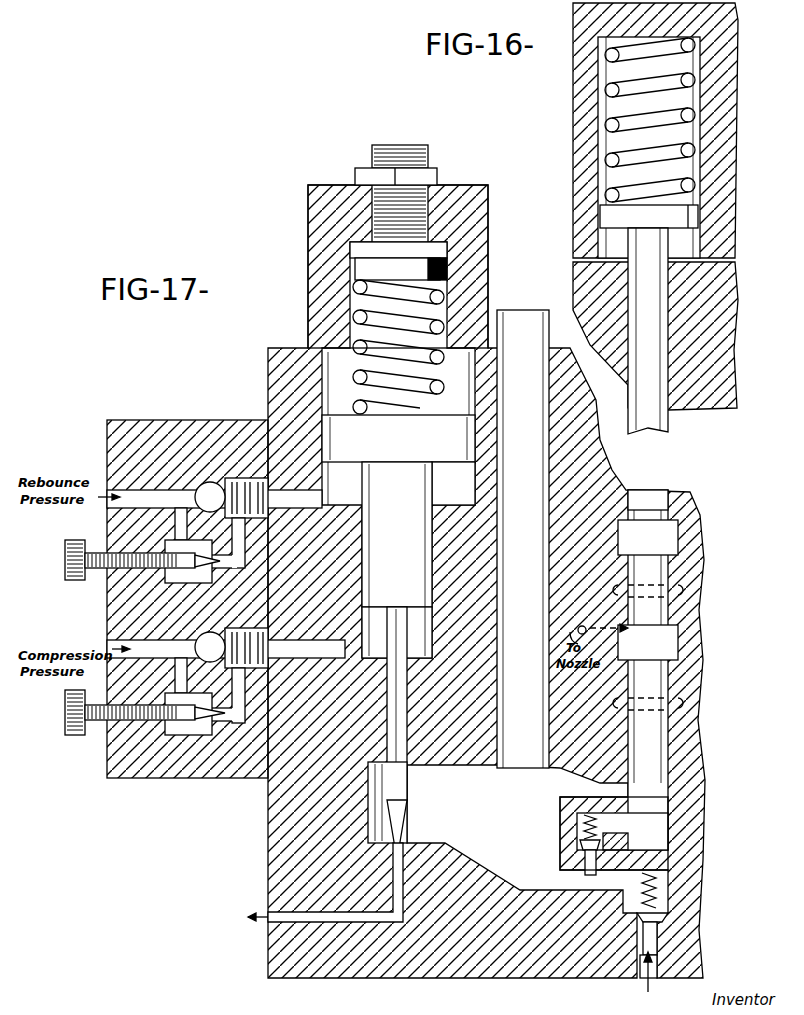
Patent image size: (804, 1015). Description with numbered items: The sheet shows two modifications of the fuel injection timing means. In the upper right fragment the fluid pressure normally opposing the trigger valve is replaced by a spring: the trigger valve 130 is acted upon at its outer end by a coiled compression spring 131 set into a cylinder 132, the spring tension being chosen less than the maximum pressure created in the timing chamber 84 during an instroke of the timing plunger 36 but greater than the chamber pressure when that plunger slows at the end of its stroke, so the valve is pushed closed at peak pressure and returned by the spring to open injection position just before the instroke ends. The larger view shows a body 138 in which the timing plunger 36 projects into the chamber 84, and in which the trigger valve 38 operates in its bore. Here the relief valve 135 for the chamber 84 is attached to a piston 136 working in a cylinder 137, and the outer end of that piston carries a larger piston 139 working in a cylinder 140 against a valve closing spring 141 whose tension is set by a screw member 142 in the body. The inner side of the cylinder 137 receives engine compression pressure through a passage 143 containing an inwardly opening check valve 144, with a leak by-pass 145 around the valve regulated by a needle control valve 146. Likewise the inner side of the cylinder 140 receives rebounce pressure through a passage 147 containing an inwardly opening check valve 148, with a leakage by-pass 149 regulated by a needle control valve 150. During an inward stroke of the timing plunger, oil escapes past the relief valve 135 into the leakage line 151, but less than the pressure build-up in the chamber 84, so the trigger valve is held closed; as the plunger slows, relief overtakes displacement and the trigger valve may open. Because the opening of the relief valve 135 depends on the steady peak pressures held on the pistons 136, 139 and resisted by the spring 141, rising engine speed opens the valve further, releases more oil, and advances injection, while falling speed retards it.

In FIG. 17, the timing plunger 36 is at (532, 556).
In FIG. 17, the trigger valve 38 is at (656, 738).
In FIG. 17, the chamber 84 is at (530, 872).
In FIG. 16, the trigger valve 130 is at (652, 244).
In FIG. 16, the coiled compression spring 131 is at (606, 85).
In FIG. 16, the cylinder 132 is at (612, 108).
In FIG. 17, the relief valve 135 is at (405, 795).
In FIG. 17, the piston 136 is at (402, 542).
In FIG. 17, the cylinder 137 is at (372, 622).
In FIG. 17, the body 138 is at (272, 818).
In FIG. 17, the larger piston 139 is at (415, 455).
In FIG. 17, the cylinder 140 is at (453, 483).
In FIG. 17, the valve closing spring 141 is at (345, 322).
In FIG. 17, the screw member 142 is at (372, 213).
In FIG. 17, the passage 143 is at (340, 652).
In FIG. 17, the check valve 144 is at (208, 638).
In FIG. 17, the leak by-pass 145 is at (225, 720).
In FIG. 17, the needle control valve 146 is at (200, 730).
In FIG. 17, the passage 147 is at (291, 508).
In FIG. 17, the check valve 148 is at (210, 490).
In FIG. 17, the leakage by-pass 149 is at (247, 548).
In FIG. 17, the needle control valve 150 is at (135, 568).
In FIG. 17, the leakage line 151 is at (403, 884).